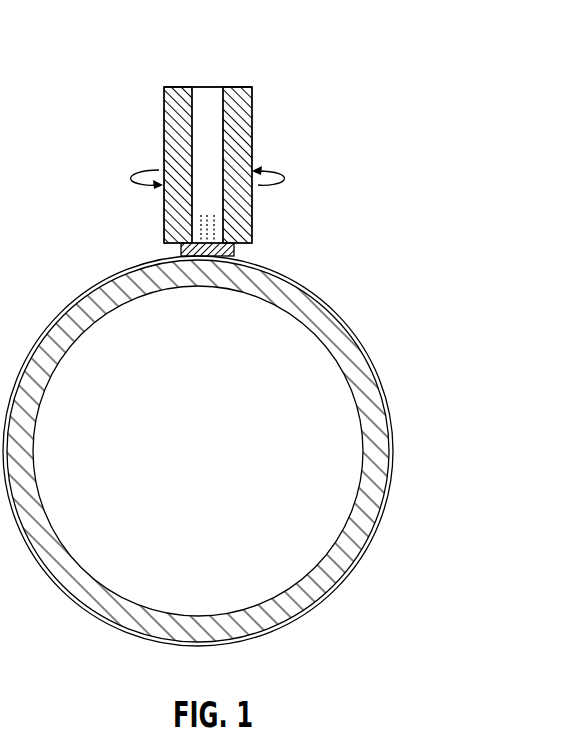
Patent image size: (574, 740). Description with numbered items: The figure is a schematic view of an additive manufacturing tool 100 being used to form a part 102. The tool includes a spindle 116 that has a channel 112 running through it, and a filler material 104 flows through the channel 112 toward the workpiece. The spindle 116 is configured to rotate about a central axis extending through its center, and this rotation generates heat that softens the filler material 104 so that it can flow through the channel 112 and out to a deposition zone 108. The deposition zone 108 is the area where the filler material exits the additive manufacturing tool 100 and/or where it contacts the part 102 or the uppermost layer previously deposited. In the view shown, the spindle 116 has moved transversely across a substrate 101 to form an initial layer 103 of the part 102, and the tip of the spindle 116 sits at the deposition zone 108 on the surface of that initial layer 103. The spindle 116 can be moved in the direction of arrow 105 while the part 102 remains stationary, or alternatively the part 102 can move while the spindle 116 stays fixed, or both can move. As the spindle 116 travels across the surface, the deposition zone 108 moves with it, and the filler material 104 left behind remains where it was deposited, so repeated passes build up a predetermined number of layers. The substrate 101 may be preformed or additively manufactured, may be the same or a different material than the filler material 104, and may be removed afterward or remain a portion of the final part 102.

The additive manufacturing tool 100 is at (222, 128).
The substrate 101 is at (338, 349).
The part 102 is at (246, 451).
The initial layer 103 is at (345, 322).
The filler material 104 is at (205, 110).
The arrow 105 is at (255, 115).
The deposition zone 108 is at (237, 255).
The channel 112 is at (212, 62).
The spindle 116 is at (172, 216).